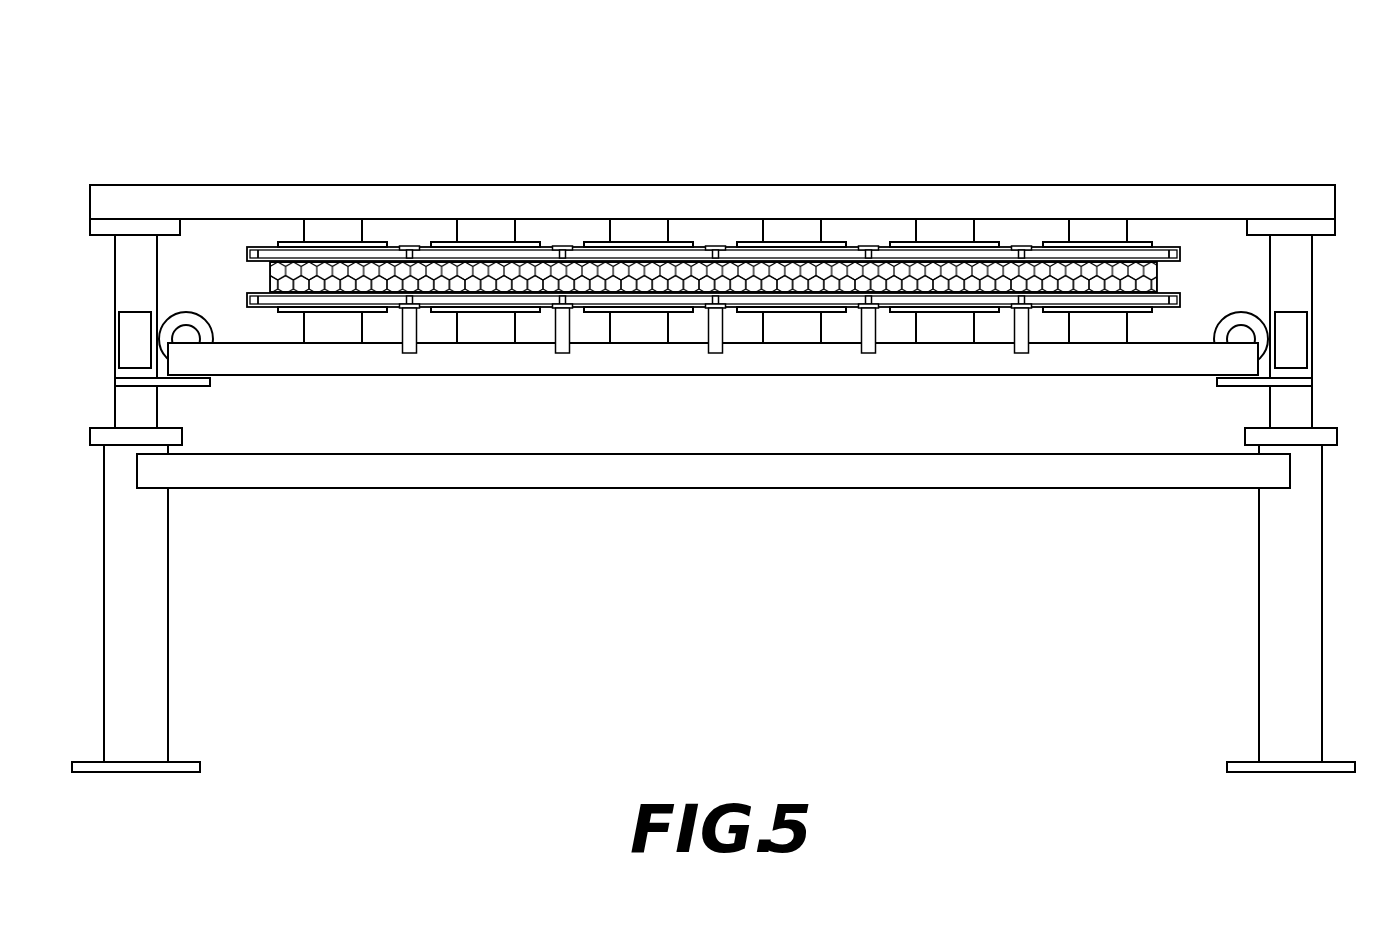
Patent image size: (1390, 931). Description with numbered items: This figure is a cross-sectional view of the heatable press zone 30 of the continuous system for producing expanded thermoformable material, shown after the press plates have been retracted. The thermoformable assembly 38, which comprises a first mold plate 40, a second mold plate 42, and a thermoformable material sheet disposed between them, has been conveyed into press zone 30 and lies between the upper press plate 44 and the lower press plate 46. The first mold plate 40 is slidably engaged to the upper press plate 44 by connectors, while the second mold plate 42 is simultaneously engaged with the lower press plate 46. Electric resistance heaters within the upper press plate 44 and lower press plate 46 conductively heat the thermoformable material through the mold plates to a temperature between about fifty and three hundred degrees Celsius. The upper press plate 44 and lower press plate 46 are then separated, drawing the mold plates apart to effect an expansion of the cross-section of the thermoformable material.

The heatable press zone 30 is at (952, 140).
The thermoformable assembly 38 is at (1178, 266).
The first mold plate 40 is at (903, 256).
The second mold plate 42 is at (903, 296).
The upper press plate 44 is at (395, 247).
The lower press plate 46 is at (395, 302).